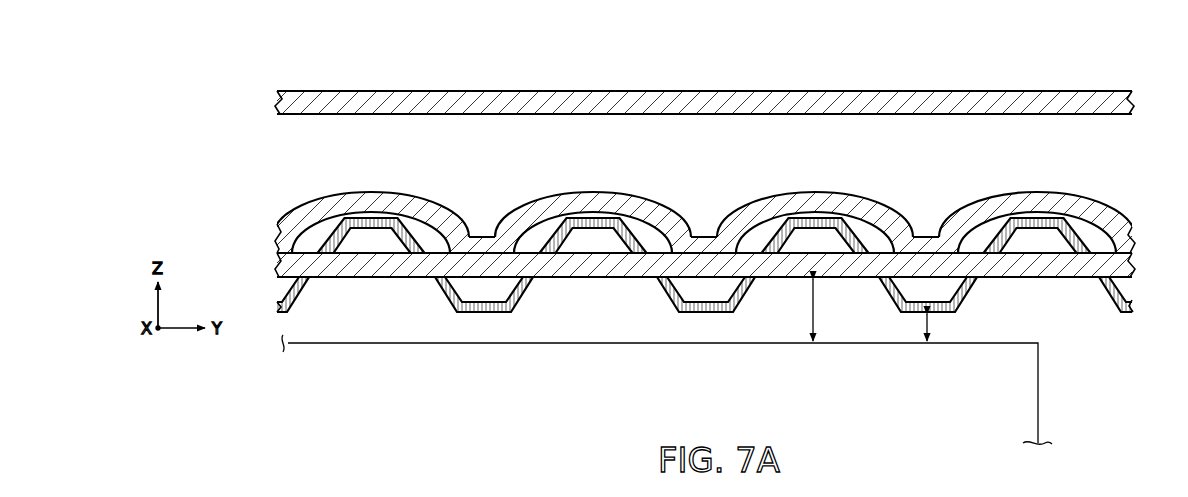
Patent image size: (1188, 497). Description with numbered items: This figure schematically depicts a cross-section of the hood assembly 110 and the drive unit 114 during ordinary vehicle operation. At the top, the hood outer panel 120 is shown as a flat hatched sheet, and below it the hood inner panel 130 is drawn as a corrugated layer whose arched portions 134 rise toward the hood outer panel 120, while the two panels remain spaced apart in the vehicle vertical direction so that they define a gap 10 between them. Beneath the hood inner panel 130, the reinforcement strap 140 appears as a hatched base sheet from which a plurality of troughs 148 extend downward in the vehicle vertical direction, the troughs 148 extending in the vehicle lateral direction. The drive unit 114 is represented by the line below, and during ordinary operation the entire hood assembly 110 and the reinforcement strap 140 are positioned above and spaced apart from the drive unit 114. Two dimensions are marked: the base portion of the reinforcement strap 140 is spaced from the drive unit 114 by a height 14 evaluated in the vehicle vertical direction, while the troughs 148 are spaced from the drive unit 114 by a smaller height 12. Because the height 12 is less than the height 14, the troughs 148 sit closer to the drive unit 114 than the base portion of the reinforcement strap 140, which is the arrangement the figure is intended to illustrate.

The gap 10 is at (739, 168).
The hood assembly 110 is at (600, 88).
The hood outer panel 120 is at (1033, 90).
The hood inner panel 130 is at (905, 210).
The arch crest 134 is at (392, 194).
The reinforcement strap 140 is at (1067, 284).
The troughs 148 is at (450, 292).
The height 14 is at (813, 308).
The height 12 is at (929, 326).
The drive unit 114 is at (1040, 388).